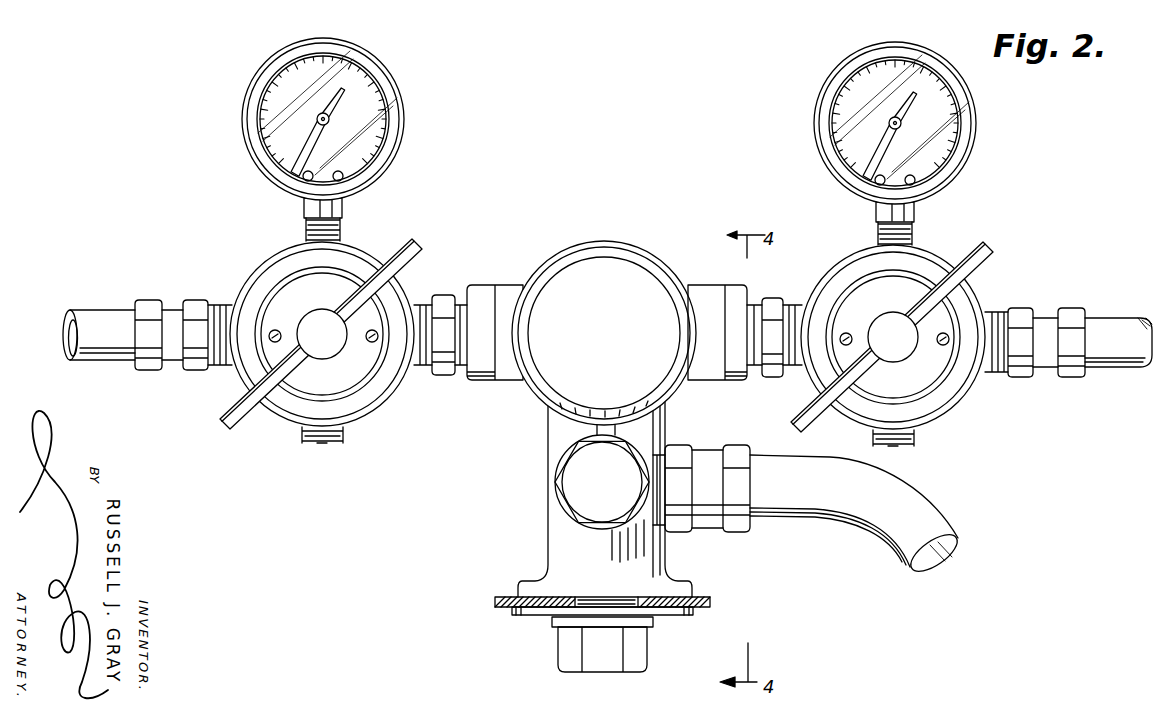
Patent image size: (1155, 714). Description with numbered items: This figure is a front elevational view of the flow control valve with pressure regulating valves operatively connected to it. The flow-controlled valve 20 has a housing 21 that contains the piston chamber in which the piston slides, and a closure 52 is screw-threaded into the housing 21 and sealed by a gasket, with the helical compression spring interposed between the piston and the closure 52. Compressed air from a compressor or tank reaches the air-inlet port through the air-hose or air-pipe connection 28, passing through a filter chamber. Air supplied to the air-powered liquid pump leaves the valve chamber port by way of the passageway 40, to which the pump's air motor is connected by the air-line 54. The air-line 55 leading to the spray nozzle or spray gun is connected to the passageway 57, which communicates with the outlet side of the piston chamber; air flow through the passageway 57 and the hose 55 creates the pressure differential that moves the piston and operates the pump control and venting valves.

The flow-controlled valve 20 is at (705, 230).
The housing 21 is at (563, 253).
The closure 52 is at (605, 255).
The passageway 40 is at (777, 300).
The passageway 57 is at (442, 372).
The air-line 55 is at (93, 318).
The air-line 54 is at (1110, 330).
The air-hose or air-pipe connection 28 is at (700, 505).